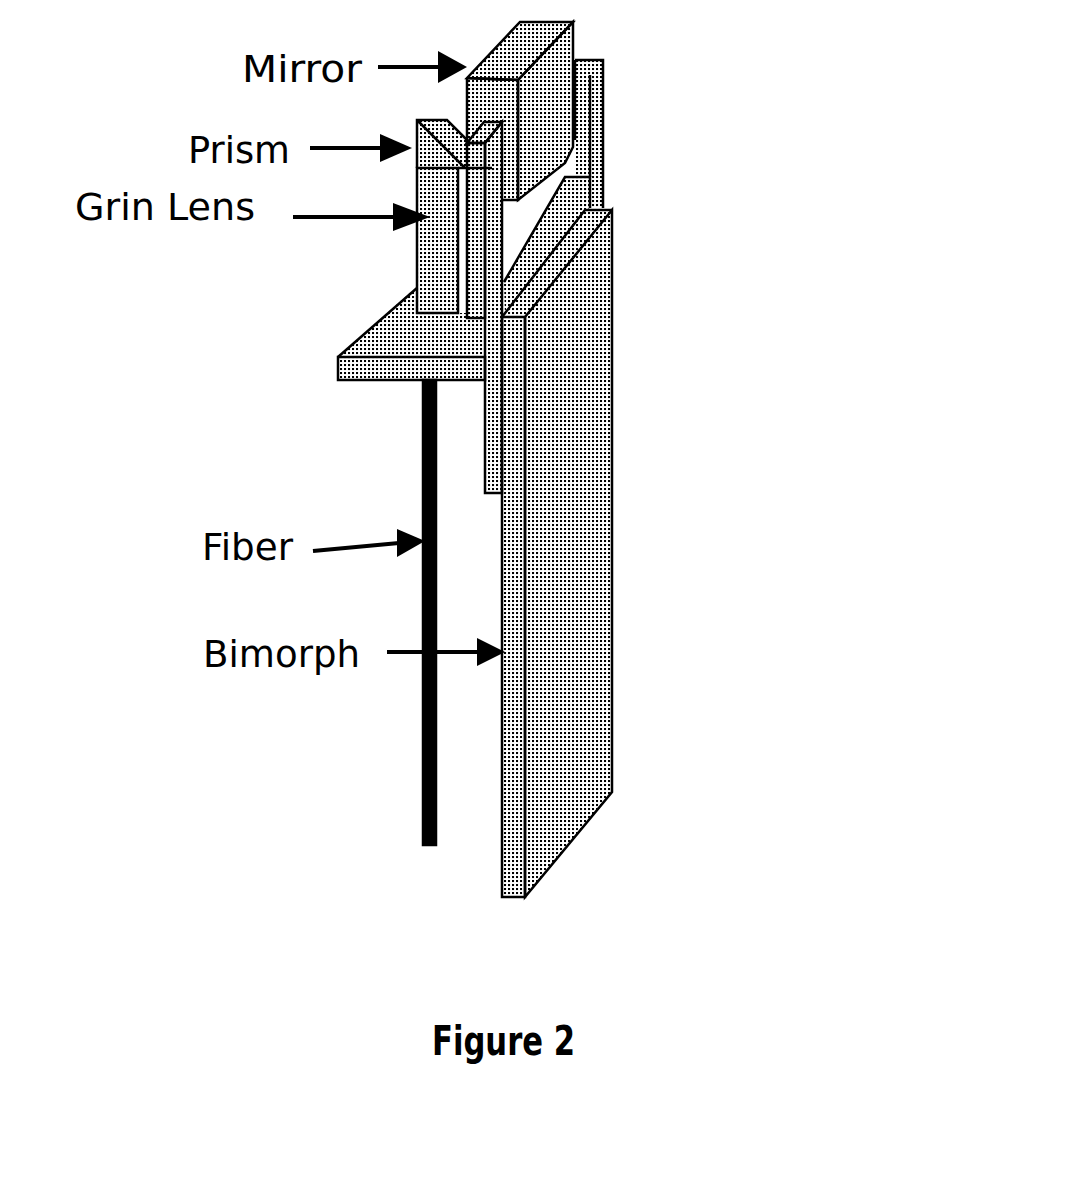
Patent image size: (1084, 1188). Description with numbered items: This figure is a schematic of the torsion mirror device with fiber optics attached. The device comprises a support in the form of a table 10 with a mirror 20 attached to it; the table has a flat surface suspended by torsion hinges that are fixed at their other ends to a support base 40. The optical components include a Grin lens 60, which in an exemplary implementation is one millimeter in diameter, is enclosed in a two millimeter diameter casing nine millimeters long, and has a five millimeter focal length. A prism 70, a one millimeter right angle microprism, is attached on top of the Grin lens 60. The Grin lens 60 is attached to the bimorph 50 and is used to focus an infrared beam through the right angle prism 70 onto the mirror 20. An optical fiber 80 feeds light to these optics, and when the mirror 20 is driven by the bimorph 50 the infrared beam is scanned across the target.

The table 10 is at (547, 75).
The mirror 20 is at (463, 40).
The support base 40 is at (605, 152).
The bimorph 50 is at (568, 550).
The Grin lens 60 is at (417, 260).
The prism 70 is at (420, 125).
The optical fiber 80 is at (420, 452).